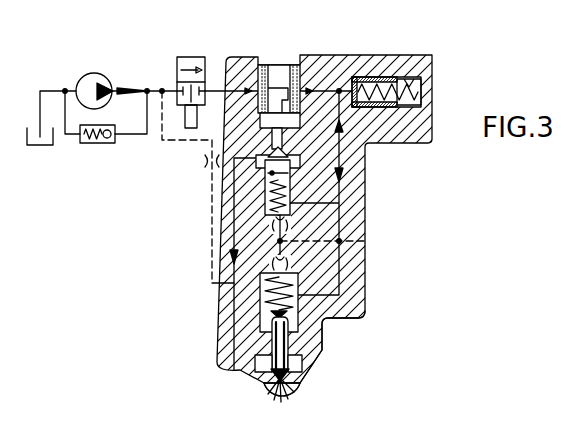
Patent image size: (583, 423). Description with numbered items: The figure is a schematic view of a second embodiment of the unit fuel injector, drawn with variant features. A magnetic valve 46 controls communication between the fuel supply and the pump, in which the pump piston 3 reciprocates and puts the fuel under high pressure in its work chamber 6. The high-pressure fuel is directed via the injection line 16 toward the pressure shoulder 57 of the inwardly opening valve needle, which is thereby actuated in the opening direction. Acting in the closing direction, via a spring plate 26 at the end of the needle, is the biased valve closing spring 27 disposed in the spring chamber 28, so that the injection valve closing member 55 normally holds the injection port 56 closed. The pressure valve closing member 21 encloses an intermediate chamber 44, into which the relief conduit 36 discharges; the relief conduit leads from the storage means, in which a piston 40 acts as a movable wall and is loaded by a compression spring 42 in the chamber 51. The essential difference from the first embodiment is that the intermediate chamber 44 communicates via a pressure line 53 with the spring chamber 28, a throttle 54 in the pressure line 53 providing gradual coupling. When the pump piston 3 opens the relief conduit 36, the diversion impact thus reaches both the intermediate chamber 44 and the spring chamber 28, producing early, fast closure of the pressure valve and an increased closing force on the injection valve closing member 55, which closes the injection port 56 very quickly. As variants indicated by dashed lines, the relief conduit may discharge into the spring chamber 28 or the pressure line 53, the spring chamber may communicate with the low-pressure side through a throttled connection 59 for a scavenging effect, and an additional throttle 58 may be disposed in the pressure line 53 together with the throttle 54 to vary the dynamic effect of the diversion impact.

The pump piston 3 is at (271, 74).
The pressure chamber 6 is at (256, 126).
The injection line 16 is at (232, 207).
The pressure valve closing member 21 is at (262, 174).
The spring plate 26 is at (298, 330).
The valve closing spring 27 is at (262, 293).
The spring chamber 28 is at (264, 307).
The relief conduit 36 is at (342, 153).
The piston 40 is at (371, 77).
The compression spring 42 is at (403, 78).
The intermediate chamber 44 is at (268, 188).
The magnetic valve 46 is at (177, 80).
The chamber 51 is at (420, 82).
The pressure line 53 is at (210, 238).
The throttle 54 is at (284, 221).
The injection valve closing member 55 is at (302, 362).
The injection port 56 is at (266, 384).
The pressure shoulder 57 is at (298, 390).
The additional throttle 58 is at (284, 263).
The throttled connection 59 is at (209, 262).